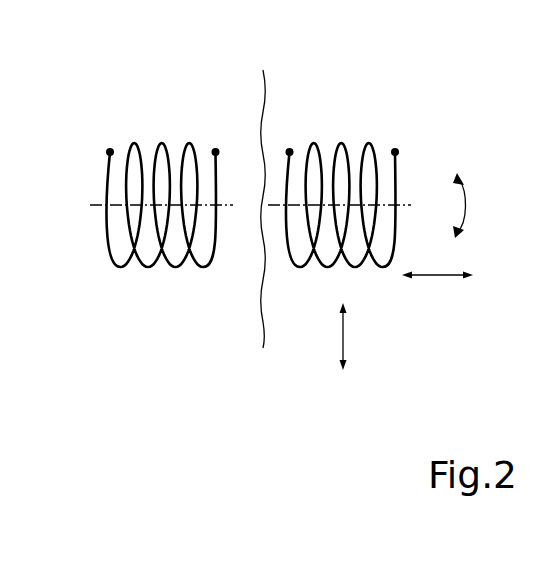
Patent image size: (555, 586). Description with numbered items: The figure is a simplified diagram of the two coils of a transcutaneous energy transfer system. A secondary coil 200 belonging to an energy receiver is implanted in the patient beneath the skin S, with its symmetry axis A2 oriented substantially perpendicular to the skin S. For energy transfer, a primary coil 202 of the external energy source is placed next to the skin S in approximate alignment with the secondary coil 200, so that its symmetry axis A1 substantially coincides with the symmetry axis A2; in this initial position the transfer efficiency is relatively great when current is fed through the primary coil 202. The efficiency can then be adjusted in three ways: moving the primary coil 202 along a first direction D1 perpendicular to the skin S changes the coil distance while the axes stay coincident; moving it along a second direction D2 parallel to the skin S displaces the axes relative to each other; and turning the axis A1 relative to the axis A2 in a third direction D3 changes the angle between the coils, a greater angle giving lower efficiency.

The secondary coil 200 is at (162, 141).
The primary coil 202 is at (340, 141).
The skin S is at (255, 187).
The symmetry axis of the primary coil A1 is at (359, 187).
The symmetry axis of the secondary coil A2 is at (139, 204).
The first direction D1 is at (437, 293).
The second direction D2 is at (370, 336).
The third direction D3 is at (486, 205).